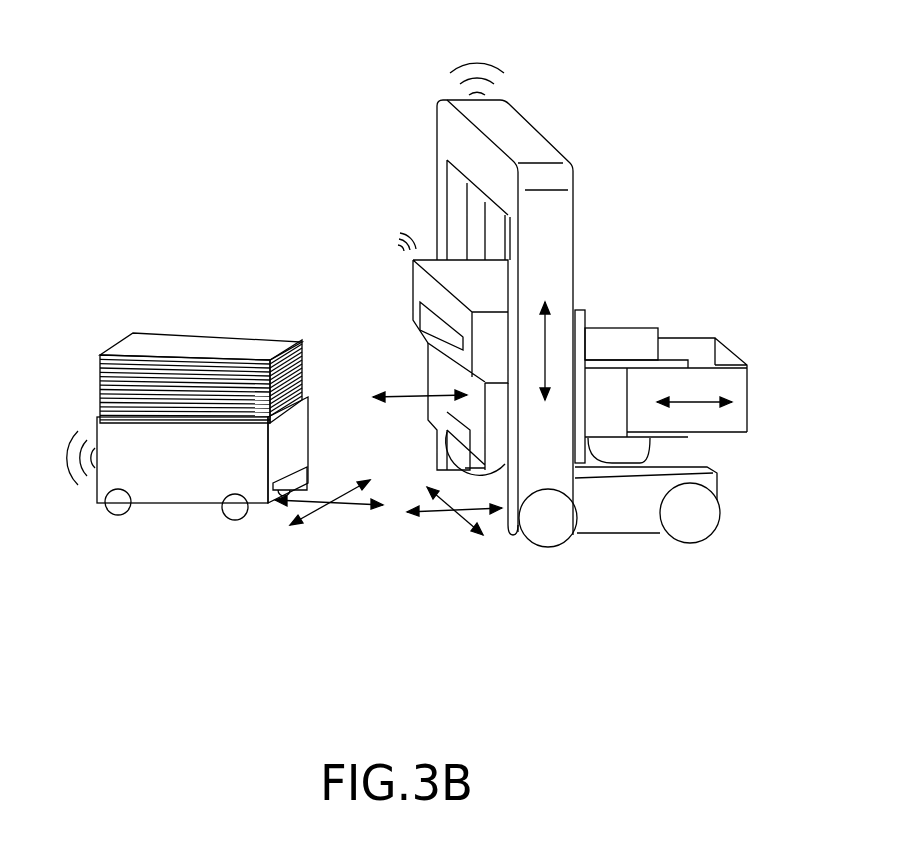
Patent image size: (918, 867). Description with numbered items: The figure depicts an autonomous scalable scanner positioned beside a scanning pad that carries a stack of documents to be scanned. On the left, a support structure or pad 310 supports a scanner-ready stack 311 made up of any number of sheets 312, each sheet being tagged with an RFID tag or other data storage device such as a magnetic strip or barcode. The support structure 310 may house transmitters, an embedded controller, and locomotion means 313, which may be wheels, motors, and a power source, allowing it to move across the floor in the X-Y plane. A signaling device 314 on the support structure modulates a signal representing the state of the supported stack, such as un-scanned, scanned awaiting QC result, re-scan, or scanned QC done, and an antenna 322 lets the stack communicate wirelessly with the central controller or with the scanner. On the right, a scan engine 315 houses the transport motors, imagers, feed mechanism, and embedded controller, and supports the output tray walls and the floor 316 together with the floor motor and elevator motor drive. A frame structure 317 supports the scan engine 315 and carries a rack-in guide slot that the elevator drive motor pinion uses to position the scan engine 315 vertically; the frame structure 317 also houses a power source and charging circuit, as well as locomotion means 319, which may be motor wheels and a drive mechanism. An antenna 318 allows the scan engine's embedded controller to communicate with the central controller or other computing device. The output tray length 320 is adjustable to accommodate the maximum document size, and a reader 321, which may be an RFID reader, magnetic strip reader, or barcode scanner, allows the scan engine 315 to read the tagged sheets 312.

The support structure 310 is at (200, 473).
The scanner-ready stack 311 is at (113, 388).
The sheet 312 is at (273, 343).
The locomotion means 313 is at (233, 513).
The signaling device 314 is at (295, 437).
The scan engine 315 is at (497, 295).
The floor 316 is at (432, 375).
The frame structure 317 is at (555, 237).
The antenna 318 is at (502, 72).
The locomotion means 319 is at (545, 535).
The output tray length 320 is at (705, 415).
The reader 321 is at (352, 250).
The antenna 322 is at (113, 460).